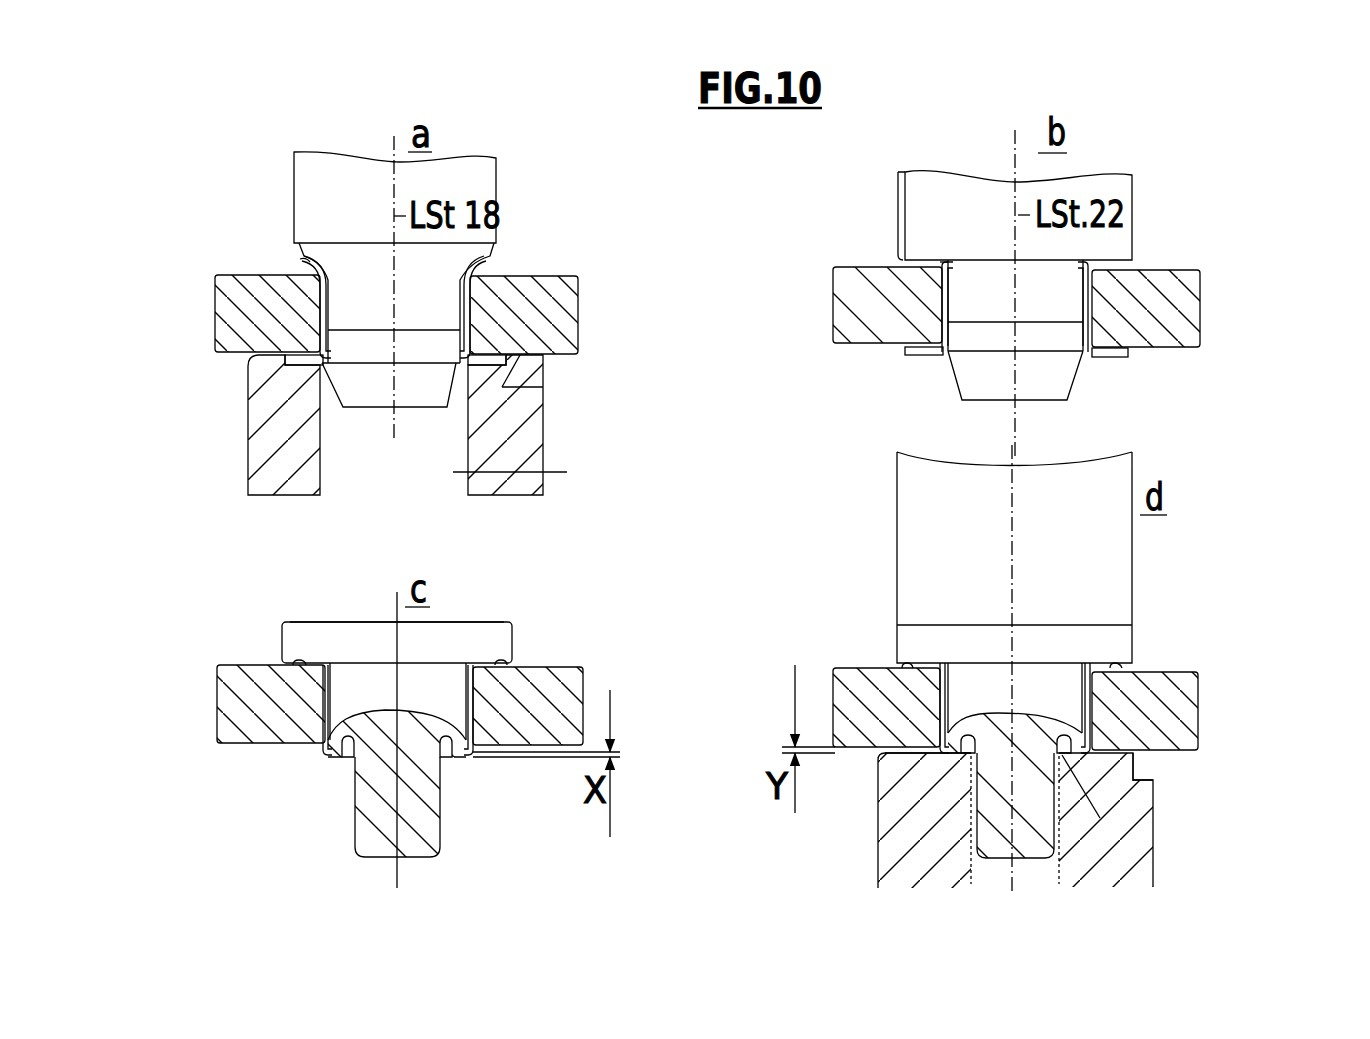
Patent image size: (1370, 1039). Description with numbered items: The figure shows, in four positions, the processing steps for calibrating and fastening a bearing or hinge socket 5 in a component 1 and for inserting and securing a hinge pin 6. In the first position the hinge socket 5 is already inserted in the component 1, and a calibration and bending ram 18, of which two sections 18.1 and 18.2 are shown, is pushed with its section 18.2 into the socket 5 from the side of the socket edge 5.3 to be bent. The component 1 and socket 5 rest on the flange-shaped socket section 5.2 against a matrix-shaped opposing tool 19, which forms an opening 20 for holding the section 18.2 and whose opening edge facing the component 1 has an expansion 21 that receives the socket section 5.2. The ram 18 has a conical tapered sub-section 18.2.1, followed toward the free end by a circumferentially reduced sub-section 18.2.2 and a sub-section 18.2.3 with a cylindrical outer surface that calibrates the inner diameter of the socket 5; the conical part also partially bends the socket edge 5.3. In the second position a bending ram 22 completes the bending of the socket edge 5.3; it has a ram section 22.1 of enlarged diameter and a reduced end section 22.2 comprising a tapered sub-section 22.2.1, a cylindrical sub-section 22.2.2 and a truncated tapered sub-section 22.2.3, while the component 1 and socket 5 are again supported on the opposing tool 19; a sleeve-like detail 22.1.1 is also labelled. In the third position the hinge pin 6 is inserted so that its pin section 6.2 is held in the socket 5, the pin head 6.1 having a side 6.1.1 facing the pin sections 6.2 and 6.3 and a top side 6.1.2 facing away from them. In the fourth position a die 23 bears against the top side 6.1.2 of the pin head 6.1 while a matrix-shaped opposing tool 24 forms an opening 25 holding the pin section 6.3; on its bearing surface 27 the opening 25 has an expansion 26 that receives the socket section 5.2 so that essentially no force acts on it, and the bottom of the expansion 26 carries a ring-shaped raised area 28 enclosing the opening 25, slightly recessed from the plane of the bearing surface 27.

The component 1 is at (527, 281).
The bearing or hinge socket 5 is at (318, 311).
The flange-shaped socket section 5.2 is at (490, 311).
The socket edge 5.3 is at (302, 261).
The hinge pin 6 is at (727, 696).
The pin head 6.1 is at (478, 633).
The side of the pin head 6.1.1 is at (498, 661).
The top side of the pin head 6.1.2 is at (325, 622).
The pin section 6.2 is at (661, 769).
The pin section 6.3 is at (423, 823).
The calibration and bending ram 18 is at (403, 319).
The section of the calibration and bending ram 18.1 is at (339, 164).
The section of the calibration and bending ram 18.2 is at (317, 355).
The conical tapered sub-section 18.2.1 is at (340, 261).
The circumferentially reduced sub-section 18.2.2 is at (364, 348).
The sub-section with cylindrical outer surface 18.2.3 is at (356, 390).
The opposing tool 19 is at (530, 429).
The opening 20 is at (529, 475).
The expansion 21 is at (545, 387).
The bending ram 22 is at (1123, 283).
The ram section 22.1 is at (1108, 183).
The forming punch sleeve 22.1.1 is at (903, 170).
The section with reduced outer diameter 22.2 is at (1148, 332).
The constricted or tapered sub-section 22.2.1 is at (1063, 272).
The sub-section with cylindrical outer surface 22.2.2 is at (1070, 330).
The truncated tapered sub-section 22.2.3 is at (1027, 390).
The die 23 is at (915, 472).
The opposing tool 24 is at (1150, 859).
The opening 25 is at (1042, 871).
The expansion 26 is at (933, 760).
The bearing or support surface 27 is at (1153, 780).
The ring-shaped raised area 28 is at (1100, 818).